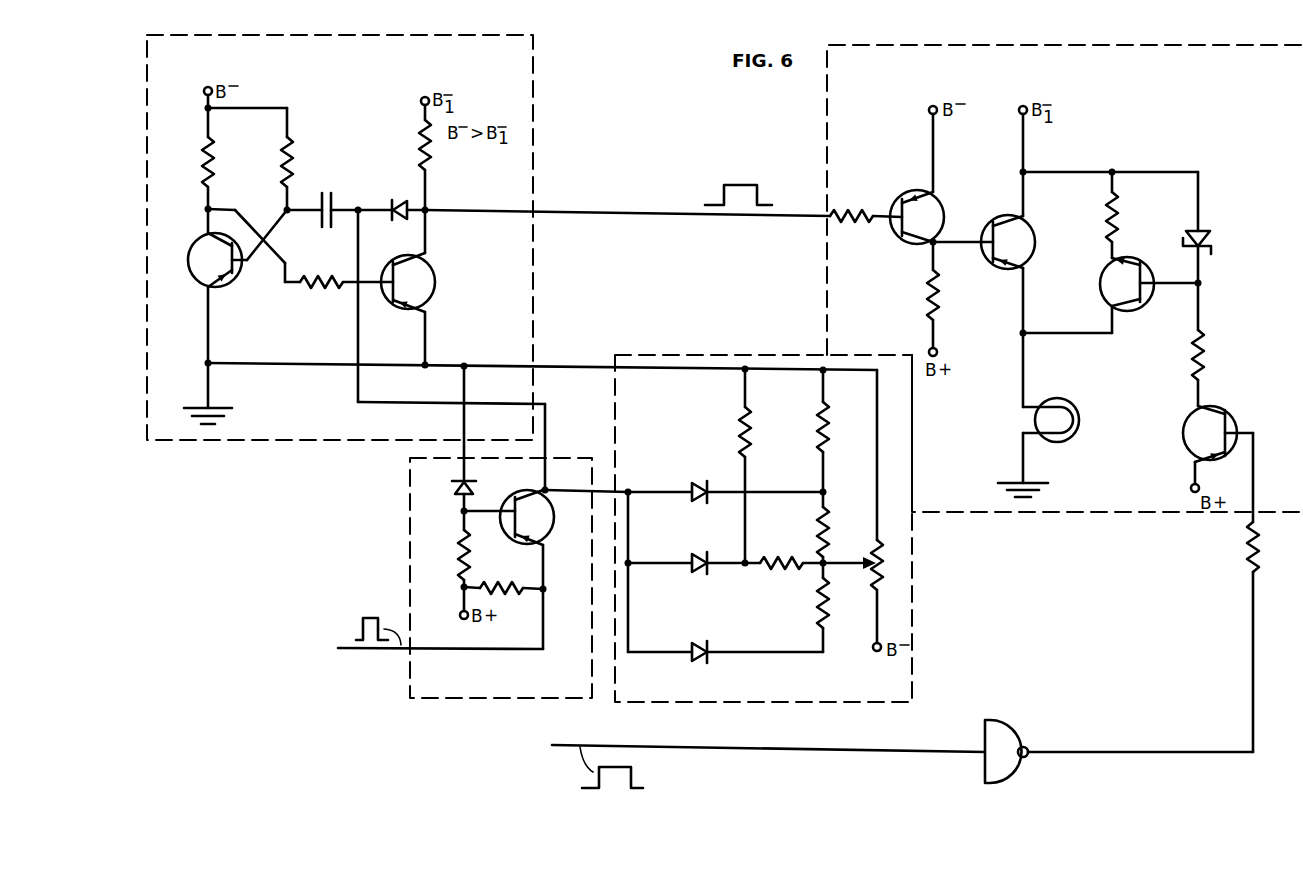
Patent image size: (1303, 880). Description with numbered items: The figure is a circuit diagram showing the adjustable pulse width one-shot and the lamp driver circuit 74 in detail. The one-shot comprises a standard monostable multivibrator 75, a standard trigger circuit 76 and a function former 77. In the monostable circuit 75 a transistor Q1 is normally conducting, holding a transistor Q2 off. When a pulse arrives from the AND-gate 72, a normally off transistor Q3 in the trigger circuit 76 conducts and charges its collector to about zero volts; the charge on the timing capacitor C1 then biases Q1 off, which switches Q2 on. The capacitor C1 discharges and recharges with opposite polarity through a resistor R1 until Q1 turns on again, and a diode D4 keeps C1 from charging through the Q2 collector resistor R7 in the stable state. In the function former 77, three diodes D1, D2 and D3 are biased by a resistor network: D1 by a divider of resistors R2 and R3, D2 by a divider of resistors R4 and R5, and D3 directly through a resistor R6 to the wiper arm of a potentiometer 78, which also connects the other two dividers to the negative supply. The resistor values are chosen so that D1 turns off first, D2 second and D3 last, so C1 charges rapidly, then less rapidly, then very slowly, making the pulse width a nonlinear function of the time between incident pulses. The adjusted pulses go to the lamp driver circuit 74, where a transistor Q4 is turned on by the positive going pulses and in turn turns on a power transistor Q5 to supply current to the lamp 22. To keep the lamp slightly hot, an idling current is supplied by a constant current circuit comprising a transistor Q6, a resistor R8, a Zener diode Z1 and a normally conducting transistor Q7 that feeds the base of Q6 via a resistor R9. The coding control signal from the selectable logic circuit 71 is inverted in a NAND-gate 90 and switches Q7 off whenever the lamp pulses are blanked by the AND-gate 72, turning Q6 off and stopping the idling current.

The monostable multivibrator 75 is at (493, 63).
The trigger circuit 76 is at (567, 700).
The function former 77 is at (908, 668).
The lamp driver circuit 74 is at (1222, 72).
The potentiometer 78 is at (882, 567).
The lamp 22 is at (1070, 428).
The NAND-gate 90 is at (1002, 731).
The selectable logic circuit 71 is at (548, 758).
The AND-gate 72 is at (332, 661).
The transistor Q1 is at (203, 262).
The transistor Q2 is at (424, 277).
The transistor Q3 is at (541, 515).
The transistor Q4 is at (934, 223).
The power transistor Q5 is at (1026, 245).
The transistor Q6 is at (1150, 290).
The transistor Q7 is at (1190, 443).
The resistor R1 is at (292, 142).
The resistor R2 is at (826, 440).
The resistor R3 is at (826, 523).
The resistor R4 is at (740, 438).
The resistor R5 is at (783, 560).
The resistor R6 is at (815, 621).
The collector resistor R7 is at (432, 146).
The resistor R8 is at (1121, 217).
The resistor R9 is at (1204, 358).
The timing capacitor C1 is at (321, 197).
The diode D1 is at (694, 487).
The diode D2 is at (695, 570).
The diode D3 is at (712, 655).
The diode D4 is at (398, 201).
The Zener diode Z1 is at (1205, 233).